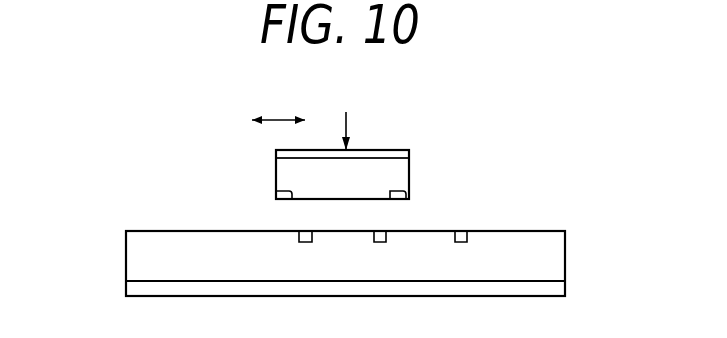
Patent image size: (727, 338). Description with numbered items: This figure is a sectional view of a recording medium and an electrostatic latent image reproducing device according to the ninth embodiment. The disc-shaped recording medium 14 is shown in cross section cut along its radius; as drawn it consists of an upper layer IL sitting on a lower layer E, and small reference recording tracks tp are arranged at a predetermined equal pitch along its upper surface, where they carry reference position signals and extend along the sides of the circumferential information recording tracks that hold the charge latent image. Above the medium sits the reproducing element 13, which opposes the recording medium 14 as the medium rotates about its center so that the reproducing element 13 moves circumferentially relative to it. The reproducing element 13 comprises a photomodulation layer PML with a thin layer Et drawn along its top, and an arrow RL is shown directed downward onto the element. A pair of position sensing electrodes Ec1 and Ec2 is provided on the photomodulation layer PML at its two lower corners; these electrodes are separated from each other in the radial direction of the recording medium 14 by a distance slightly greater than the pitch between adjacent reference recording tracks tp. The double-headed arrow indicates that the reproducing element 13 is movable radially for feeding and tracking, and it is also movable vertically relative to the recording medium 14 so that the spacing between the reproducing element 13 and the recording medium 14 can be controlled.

The reproducing element 13 is at (346, 152).
The recording medium 14 is at (345, 248).
The load direction RL is at (305, 118).
The top electrode Et is at (292, 149).
The photomodulation layer PML is at (398, 172).
The position sensing electrode Ec1 is at (406, 191).
The position sensing electrode Ec2 is at (277, 195).
The reference recording tracks tp is at (300, 229).
The insulating layer IL is at (557, 238).
The electrode layer E is at (557, 284).